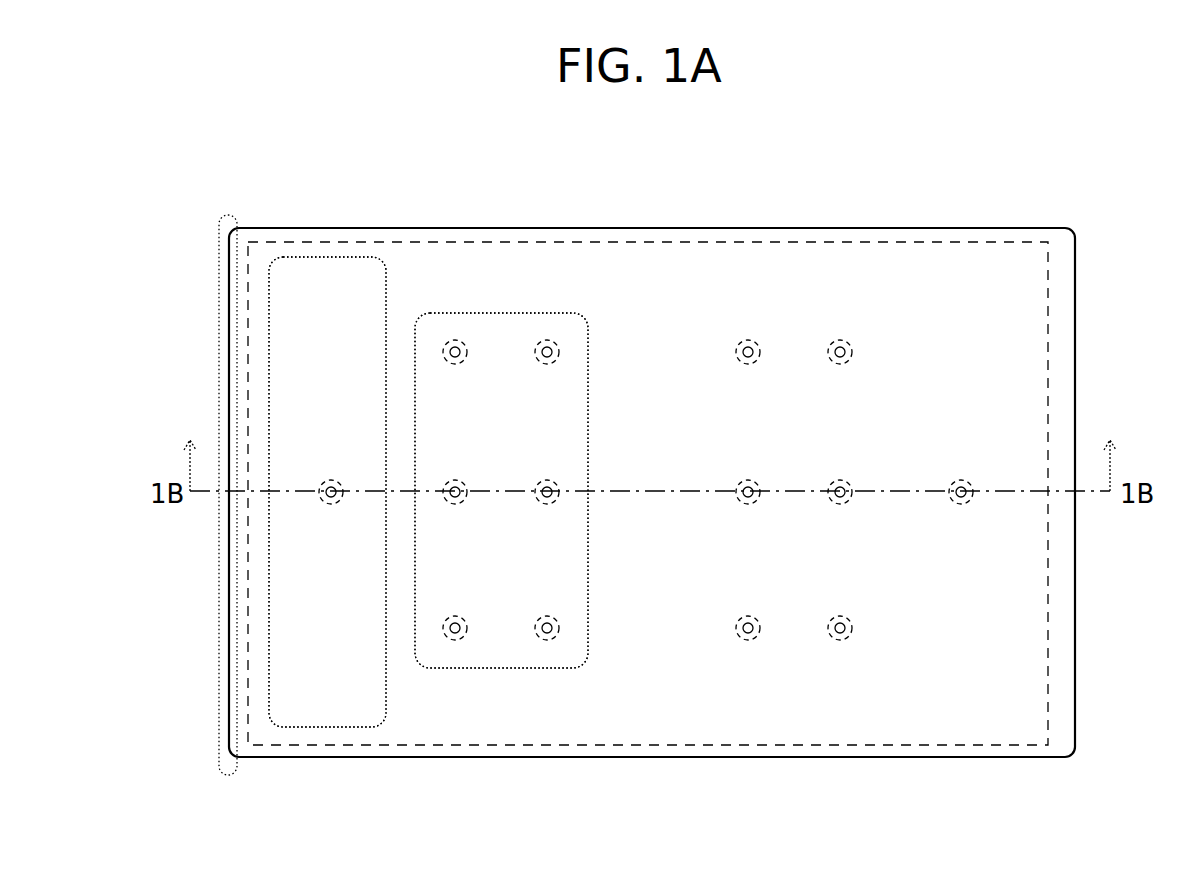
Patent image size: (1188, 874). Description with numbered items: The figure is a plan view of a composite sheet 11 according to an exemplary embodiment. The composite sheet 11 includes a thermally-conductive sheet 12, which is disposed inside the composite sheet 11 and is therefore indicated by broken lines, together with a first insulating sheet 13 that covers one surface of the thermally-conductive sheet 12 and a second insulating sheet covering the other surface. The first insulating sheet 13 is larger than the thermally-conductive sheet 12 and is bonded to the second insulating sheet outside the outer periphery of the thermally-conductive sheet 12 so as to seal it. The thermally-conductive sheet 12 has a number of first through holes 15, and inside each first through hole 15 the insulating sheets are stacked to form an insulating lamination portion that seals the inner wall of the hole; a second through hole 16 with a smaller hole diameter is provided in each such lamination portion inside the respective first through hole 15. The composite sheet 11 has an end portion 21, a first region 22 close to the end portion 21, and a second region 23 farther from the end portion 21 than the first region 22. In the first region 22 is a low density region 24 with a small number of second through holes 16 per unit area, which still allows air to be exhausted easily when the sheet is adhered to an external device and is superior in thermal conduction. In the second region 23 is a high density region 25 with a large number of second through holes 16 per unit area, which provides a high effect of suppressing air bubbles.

The composite sheet 11 is at (1003, 210).
The thermally-conductive sheet 12 is at (1013, 663).
The first insulating sheet 13 is at (1060, 303).
The first through hole 15 is at (975, 498).
The second through hole 16 is at (843, 345).
The end portion 21 is at (224, 775).
The first region 22 is at (322, 727).
The second region 23 is at (487, 668).
The low density region 24 is at (323, 257).
The high density region 25 is at (498, 313).